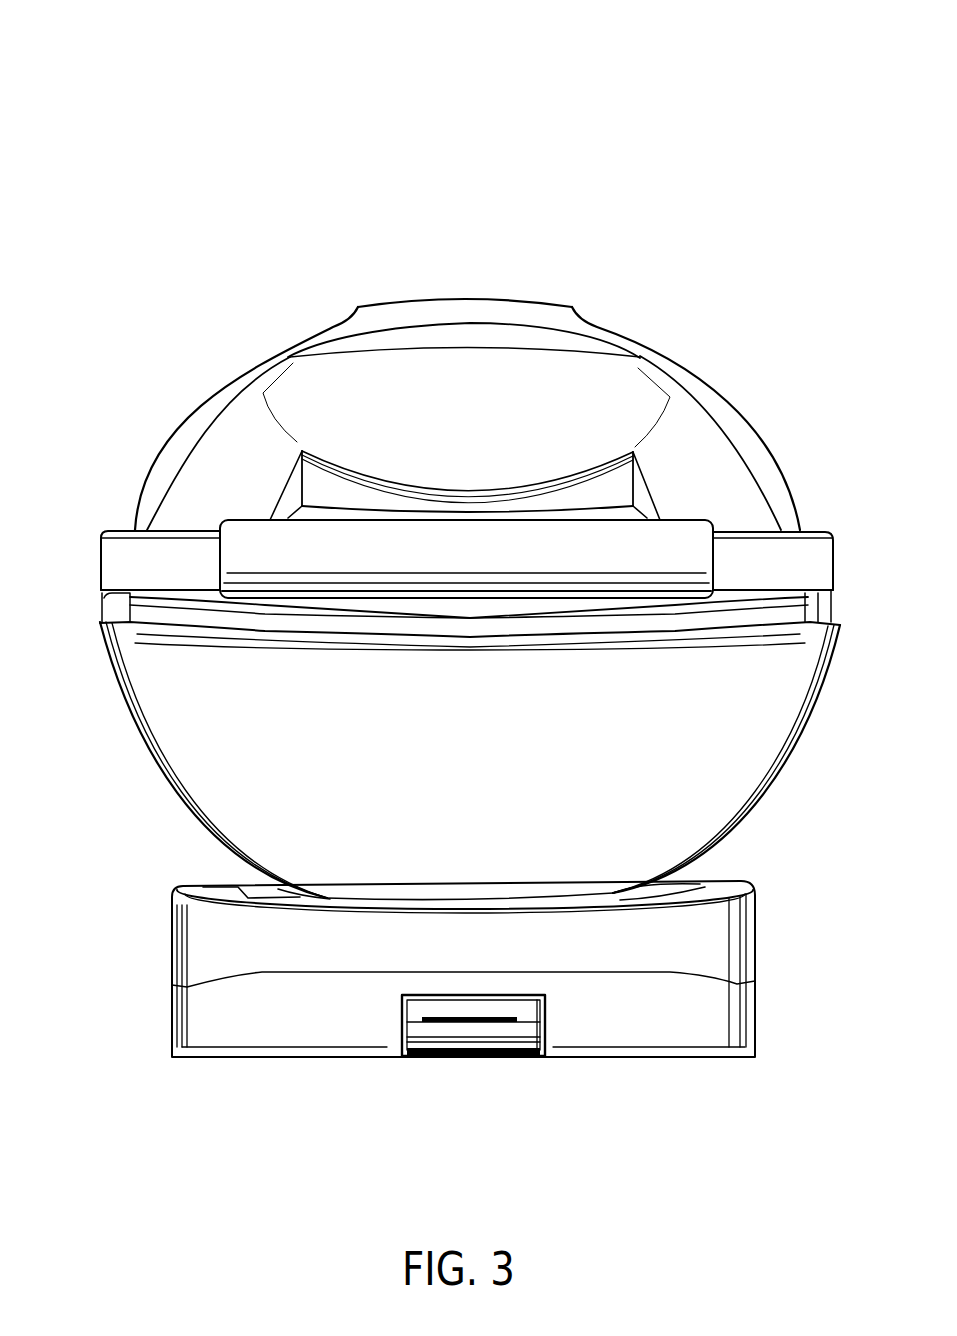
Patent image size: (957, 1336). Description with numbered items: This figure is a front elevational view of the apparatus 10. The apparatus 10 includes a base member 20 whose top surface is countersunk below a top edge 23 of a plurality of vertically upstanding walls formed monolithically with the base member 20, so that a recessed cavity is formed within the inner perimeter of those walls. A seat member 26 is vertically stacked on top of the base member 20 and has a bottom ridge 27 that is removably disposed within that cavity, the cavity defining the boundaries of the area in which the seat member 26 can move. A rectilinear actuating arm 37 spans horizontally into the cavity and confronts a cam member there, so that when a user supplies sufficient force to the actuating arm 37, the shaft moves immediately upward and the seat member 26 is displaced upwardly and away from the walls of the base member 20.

The apparatus 10 is at (765, 112).
The base member 20 is at (670, 1022).
The top edge 23 is at (206, 886).
The seat member 26 is at (127, 667).
The bottom ridge 27 is at (210, 830).
The actuating arm 37 is at (528, 1028).